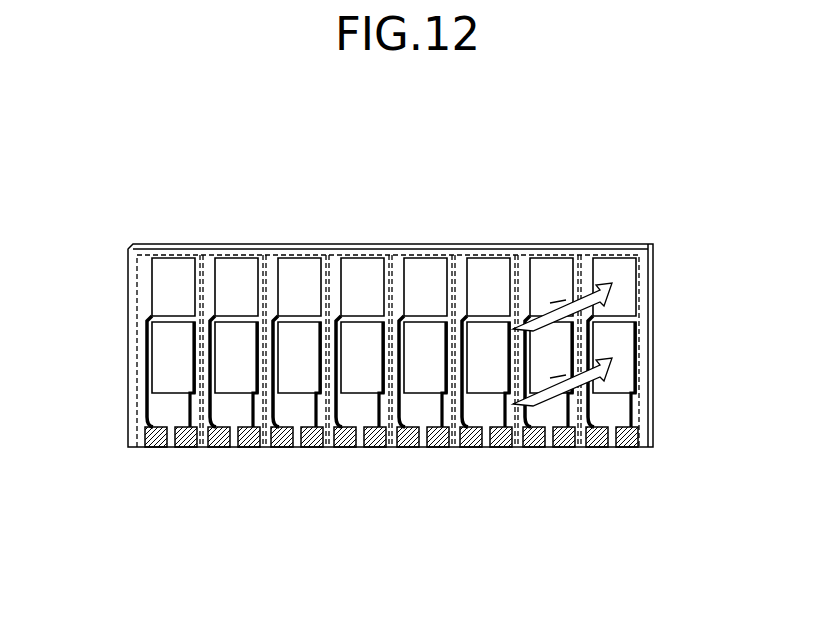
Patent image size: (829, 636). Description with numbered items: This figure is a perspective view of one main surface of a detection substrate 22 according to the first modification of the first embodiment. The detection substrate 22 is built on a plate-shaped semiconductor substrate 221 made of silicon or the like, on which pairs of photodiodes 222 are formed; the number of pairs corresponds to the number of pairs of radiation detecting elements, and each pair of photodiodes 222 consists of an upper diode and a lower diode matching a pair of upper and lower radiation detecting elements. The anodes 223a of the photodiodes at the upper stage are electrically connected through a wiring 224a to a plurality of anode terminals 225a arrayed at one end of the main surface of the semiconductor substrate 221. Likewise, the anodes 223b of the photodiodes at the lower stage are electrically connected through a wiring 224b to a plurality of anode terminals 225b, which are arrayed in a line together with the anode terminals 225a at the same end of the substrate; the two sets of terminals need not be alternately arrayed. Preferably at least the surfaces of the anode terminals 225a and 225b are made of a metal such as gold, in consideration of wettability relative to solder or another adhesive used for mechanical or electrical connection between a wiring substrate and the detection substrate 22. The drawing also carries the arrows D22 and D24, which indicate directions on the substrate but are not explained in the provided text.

The detection substrate 22 is at (110, 160).
The semiconductor substrate 221 is at (654, 322).
The photodiodes 222 is at (608, 256).
The anodes of the photodiodes at an upper stage 223a is at (637, 279).
The anodes of the photodiodes at a lower stage 223b is at (637, 367).
The wiring 224a is at (603, 438).
The wiring 224b is at (648, 426).
The anode terminals 225a is at (590, 448).
The anode terminals 225b is at (627, 447).
The direction of element arrangement D22 is at (606, 282).
The direction of wiring arrangement D24 is at (612, 362).